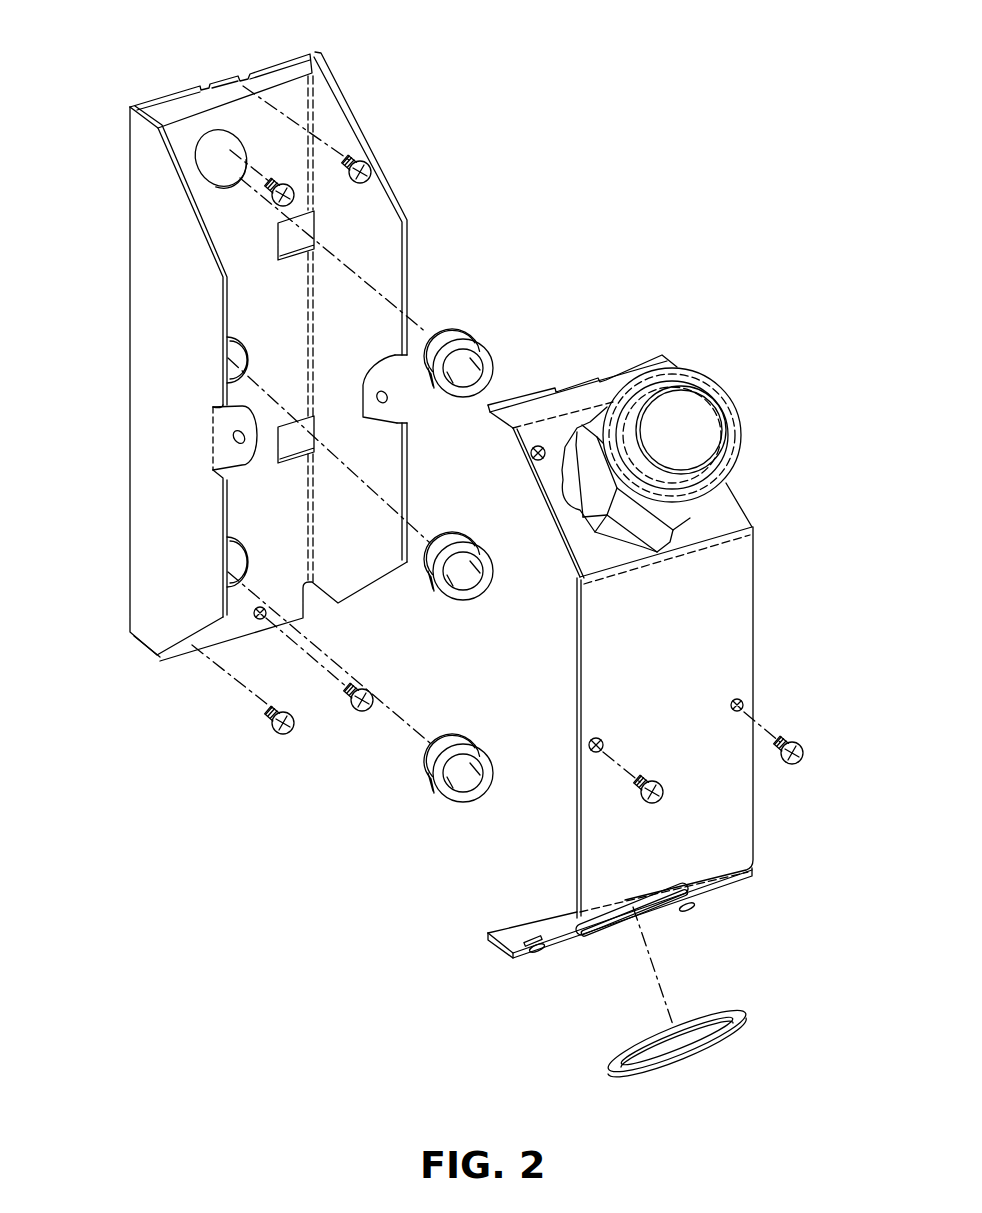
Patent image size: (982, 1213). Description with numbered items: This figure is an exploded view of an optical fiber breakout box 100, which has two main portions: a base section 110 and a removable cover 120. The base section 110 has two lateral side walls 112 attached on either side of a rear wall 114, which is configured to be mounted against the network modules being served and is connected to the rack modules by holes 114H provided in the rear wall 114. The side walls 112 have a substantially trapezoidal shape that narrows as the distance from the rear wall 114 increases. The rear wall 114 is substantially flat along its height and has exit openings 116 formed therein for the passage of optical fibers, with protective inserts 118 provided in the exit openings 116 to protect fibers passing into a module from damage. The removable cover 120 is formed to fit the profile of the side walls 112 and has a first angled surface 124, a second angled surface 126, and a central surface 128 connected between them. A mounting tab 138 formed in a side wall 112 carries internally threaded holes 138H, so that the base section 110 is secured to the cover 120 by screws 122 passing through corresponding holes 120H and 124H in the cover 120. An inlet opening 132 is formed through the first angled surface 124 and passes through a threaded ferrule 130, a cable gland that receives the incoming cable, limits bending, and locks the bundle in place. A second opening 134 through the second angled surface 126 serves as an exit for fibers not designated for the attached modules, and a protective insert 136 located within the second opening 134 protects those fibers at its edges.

The breakout box 100 is at (694, 195).
The base section 110 is at (130, 208).
The side walls 112 is at (163, 173).
The rear wall 114 is at (267, 122).
The holes 114H is at (261, 620).
The exit openings 116 is at (235, 132).
The protective inserts 118 is at (483, 335).
The removable cover 120 is at (753, 647).
The holes 120H is at (744, 703).
The screws 122 is at (273, 728).
The first angled surface 124 is at (731, 512).
The hole 124H is at (539, 447).
The second angled surface 126 is at (690, 895).
The central surface 128 is at (597, 698).
The threaded ferrule 130 is at (727, 396).
The inlet opening 132 is at (683, 418).
The second opening 134 is at (600, 933).
The protective insert 136 is at (747, 1018).
The mounting tab 138 is at (233, 457).
The internally threaded holes 138H is at (236, 436).